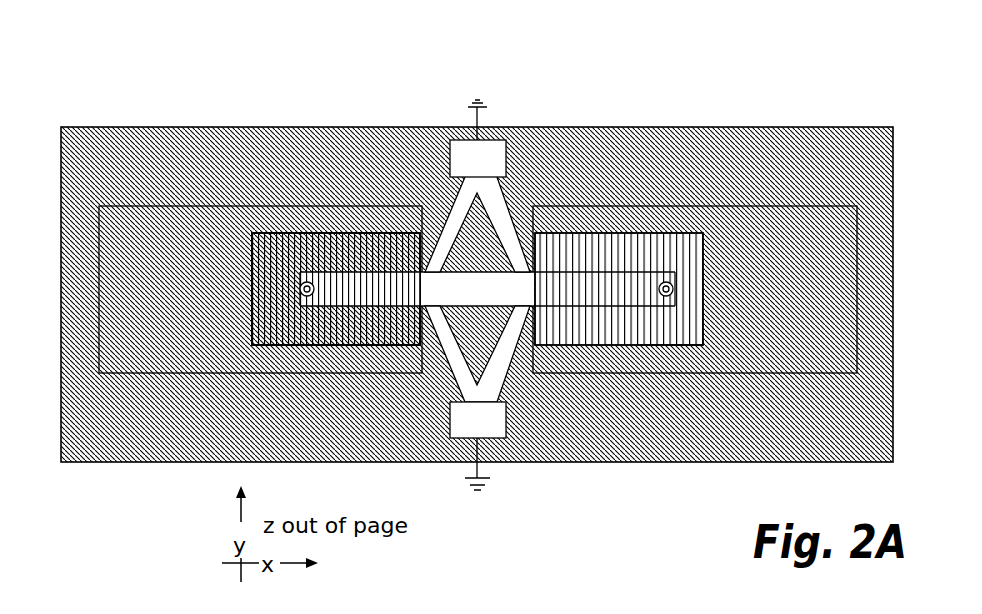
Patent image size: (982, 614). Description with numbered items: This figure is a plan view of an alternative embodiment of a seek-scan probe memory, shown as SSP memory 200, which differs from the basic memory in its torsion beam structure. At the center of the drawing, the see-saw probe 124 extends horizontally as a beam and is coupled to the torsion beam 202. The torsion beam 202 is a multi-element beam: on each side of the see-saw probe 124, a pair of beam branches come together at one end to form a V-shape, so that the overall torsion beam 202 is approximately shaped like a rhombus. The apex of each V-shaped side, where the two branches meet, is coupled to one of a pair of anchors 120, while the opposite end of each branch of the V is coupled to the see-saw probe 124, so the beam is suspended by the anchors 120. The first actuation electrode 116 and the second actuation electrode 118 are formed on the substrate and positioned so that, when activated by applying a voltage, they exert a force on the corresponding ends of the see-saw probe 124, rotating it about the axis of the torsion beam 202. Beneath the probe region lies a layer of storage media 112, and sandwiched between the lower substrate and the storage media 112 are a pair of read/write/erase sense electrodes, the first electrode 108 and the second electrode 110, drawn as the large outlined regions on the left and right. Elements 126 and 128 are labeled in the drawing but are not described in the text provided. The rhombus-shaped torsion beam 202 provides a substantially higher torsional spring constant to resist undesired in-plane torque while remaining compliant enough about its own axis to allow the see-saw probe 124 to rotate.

The SSP memory 200 is at (472, 248).
The first electrode 108 is at (143, 213).
The second electrode 110 is at (766, 205).
The storage media 112 is at (283, 456).
The first actuation electrode 116 is at (277, 342).
The second actuation electrode 118 is at (650, 343).
The anchors 120 is at (497, 153).
The see-saw probe 124 is at (487, 289).
The first plate 126 is at (303, 233).
The second plate 128 is at (667, 282).
The torsion beam 202 is at (453, 217).